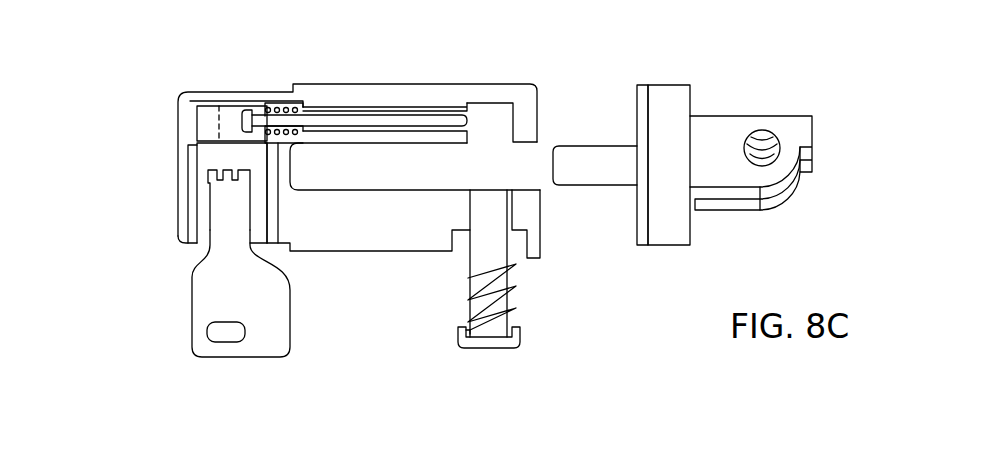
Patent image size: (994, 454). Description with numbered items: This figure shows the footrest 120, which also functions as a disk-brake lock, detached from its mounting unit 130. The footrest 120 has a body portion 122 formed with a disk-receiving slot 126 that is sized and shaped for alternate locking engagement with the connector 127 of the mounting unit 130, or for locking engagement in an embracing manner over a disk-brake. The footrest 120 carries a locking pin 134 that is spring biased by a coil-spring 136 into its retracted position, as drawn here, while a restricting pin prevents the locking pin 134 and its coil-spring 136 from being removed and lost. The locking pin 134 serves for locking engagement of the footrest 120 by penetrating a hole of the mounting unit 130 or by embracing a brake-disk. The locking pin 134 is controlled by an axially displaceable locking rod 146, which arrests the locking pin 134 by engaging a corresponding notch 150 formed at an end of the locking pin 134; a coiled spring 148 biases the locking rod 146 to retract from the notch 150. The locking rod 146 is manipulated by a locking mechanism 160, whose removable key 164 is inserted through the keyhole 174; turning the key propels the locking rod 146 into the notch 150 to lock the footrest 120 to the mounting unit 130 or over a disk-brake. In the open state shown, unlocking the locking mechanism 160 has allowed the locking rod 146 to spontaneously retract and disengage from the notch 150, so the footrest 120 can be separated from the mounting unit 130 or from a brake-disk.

The footrest 120 is at (339, 305).
The body portion 122 is at (383, 228).
The disk-receiving slot 126 is at (507, 167).
The connector 127 is at (591, 174).
The mounting unit 130 is at (727, 135).
The locking pin 134 is at (498, 281).
The coil-spring 136 is at (512, 322).
The locking rod 146 is at (347, 120).
The coiled spring 148 is at (280, 107).
The notch 150 is at (472, 209).
The locking mechanism 160 is at (220, 156).
The removable key 164 is at (198, 340).
The keyhole 174 is at (203, 230).